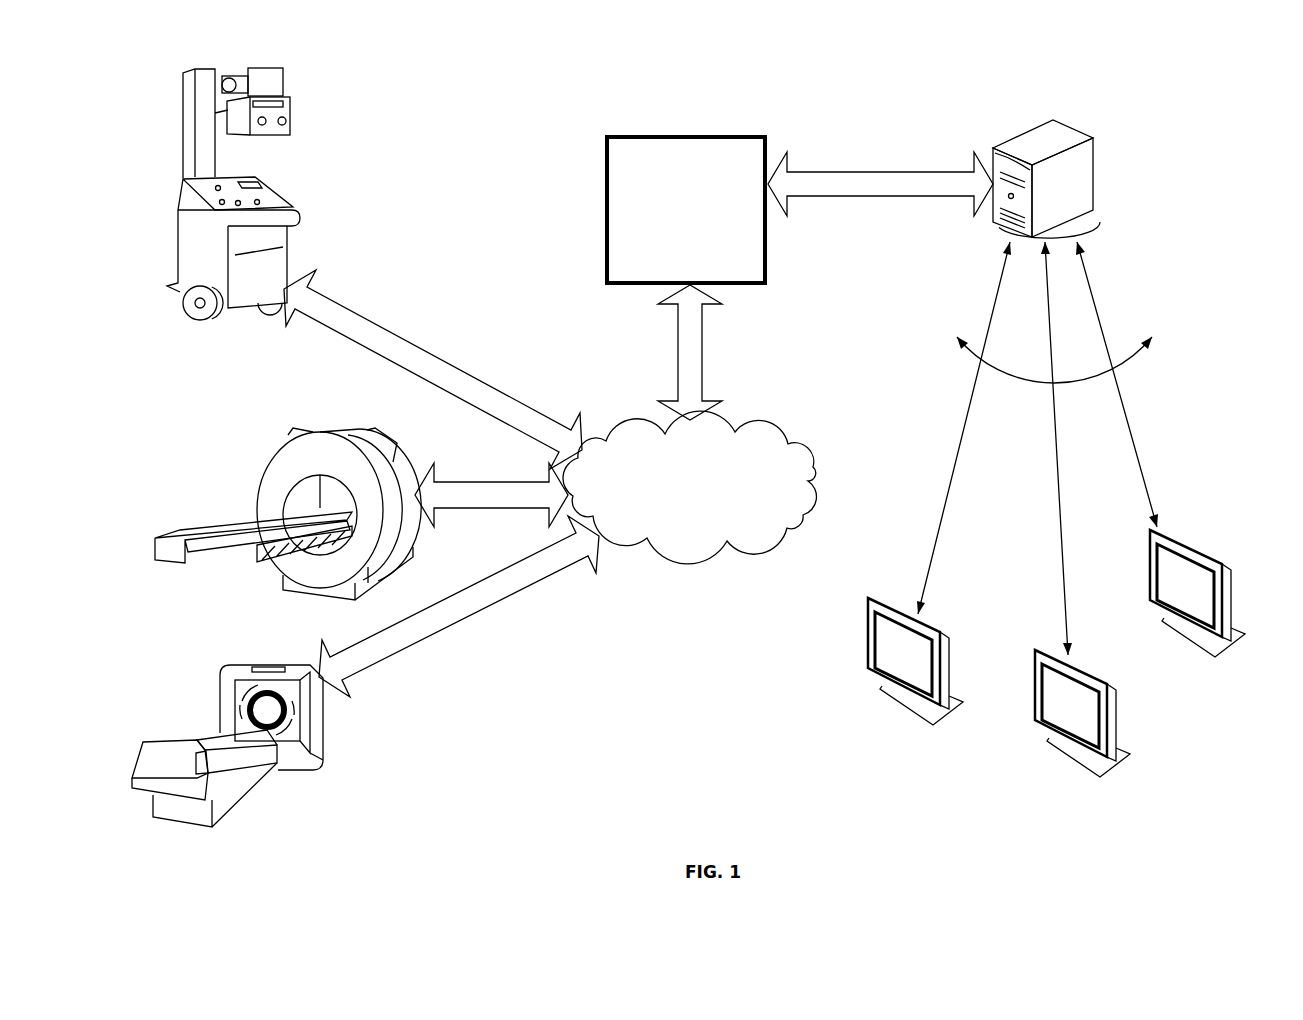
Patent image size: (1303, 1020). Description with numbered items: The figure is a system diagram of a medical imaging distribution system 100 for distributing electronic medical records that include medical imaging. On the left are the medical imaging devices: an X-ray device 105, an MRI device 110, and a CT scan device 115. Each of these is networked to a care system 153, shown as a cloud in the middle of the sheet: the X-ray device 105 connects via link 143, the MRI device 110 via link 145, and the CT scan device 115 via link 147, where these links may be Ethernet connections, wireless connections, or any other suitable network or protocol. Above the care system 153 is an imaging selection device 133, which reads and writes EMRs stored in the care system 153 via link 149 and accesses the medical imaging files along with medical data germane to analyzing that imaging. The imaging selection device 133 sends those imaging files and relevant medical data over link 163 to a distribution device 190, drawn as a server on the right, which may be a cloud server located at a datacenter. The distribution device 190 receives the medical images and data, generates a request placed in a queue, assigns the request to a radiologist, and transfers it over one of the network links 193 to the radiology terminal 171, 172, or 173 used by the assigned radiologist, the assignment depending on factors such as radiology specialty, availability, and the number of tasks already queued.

The system 100 is at (1205, 857).
The X-ray device 105 is at (293, 233).
The MRI device 110 is at (288, 458).
The CT scan device 115 is at (328, 737).
The imaging selection device 133 is at (673, 258).
The link 143 is at (471, 374).
The link 145 is at (472, 483).
The link 147 is at (523, 587).
The link 149 is at (693, 340).
The care system 153 is at (685, 509).
The link 163 is at (870, 187).
The radiology terminal 171 is at (950, 715).
The radiology terminal 172 is at (1117, 772).
The radiology terminal 173 is at (1235, 640).
The distribution device 190 is at (1093, 160).
The network links 193 is at (1051, 344).